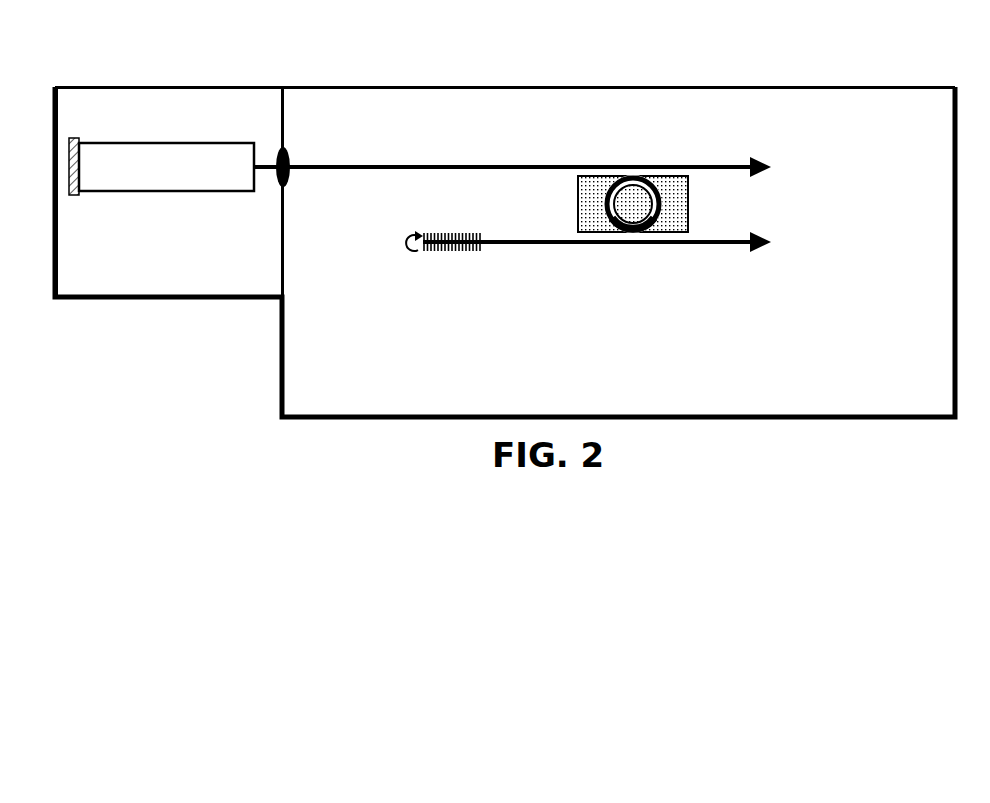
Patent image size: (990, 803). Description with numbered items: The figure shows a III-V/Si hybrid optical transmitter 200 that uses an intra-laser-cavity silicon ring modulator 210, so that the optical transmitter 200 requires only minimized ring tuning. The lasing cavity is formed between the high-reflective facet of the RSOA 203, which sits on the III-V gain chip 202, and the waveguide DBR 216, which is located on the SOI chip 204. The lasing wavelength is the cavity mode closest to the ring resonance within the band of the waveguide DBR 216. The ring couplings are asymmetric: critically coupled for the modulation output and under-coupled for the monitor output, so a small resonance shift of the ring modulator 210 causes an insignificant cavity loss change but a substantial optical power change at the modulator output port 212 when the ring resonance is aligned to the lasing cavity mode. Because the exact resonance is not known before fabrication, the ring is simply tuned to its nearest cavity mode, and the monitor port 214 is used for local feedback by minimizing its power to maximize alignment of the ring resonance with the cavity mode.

The optical transmitter 200 is at (505, 252).
The III-V gain chip 202 is at (169, 192).
The RSOA 203 is at (161, 166).
The SOI chip 204 is at (618, 252).
The silicon ring modulator 210 is at (633, 177).
The modulator output port 212 is at (835, 170).
The monitor port 214 is at (842, 255).
The waveguide DBR 216 is at (452, 266).